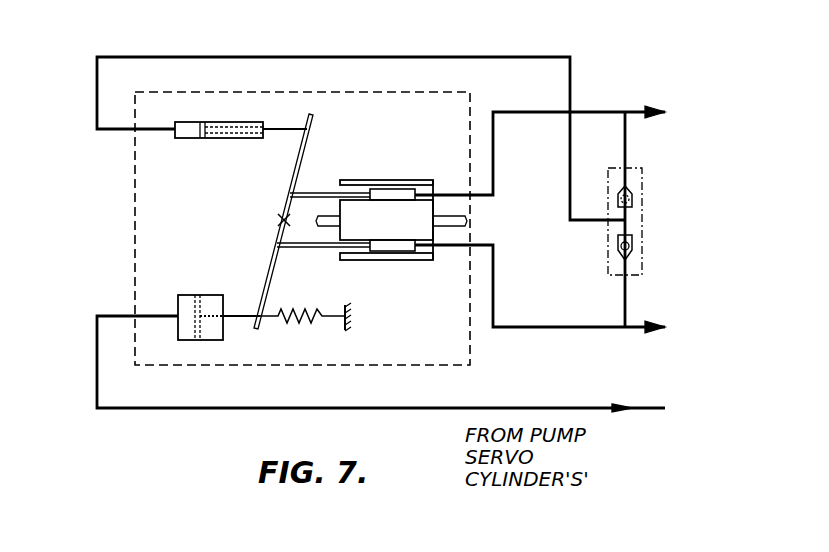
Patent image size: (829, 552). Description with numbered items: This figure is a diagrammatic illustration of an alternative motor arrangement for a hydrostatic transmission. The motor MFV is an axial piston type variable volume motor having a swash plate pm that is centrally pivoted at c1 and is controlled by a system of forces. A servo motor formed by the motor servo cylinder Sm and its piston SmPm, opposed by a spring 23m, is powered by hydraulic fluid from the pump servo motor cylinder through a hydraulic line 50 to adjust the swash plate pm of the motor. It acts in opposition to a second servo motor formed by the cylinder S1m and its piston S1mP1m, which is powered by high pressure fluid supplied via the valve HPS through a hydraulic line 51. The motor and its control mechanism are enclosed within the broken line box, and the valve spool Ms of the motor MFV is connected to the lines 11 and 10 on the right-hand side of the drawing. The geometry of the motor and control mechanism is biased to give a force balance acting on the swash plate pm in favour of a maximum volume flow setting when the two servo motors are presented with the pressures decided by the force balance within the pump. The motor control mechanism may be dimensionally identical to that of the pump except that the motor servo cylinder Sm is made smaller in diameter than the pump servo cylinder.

The hydraulic line 51 is at (337, 57).
The hydraulic line 50 is at (97, 330).
The high pressure line 11 is at (506, 112).
The low pressure line 10 is at (500, 328).
The valve HPS is at (605, 246).
The servo motor cylinder S1m is at (194, 122).
The servo motor piston S1mP1m is at (203, 148).
The swash plate pm is at (298, 162).
The pivot c1 is at (278, 220).
The motor MFV is at (386, 182).
The valve spool Ms is at (462, 222).
The motor servo cylinder Sm is at (224, 295).
The servo motor piston SmPm is at (192, 312).
The spring 23m is at (300, 320).